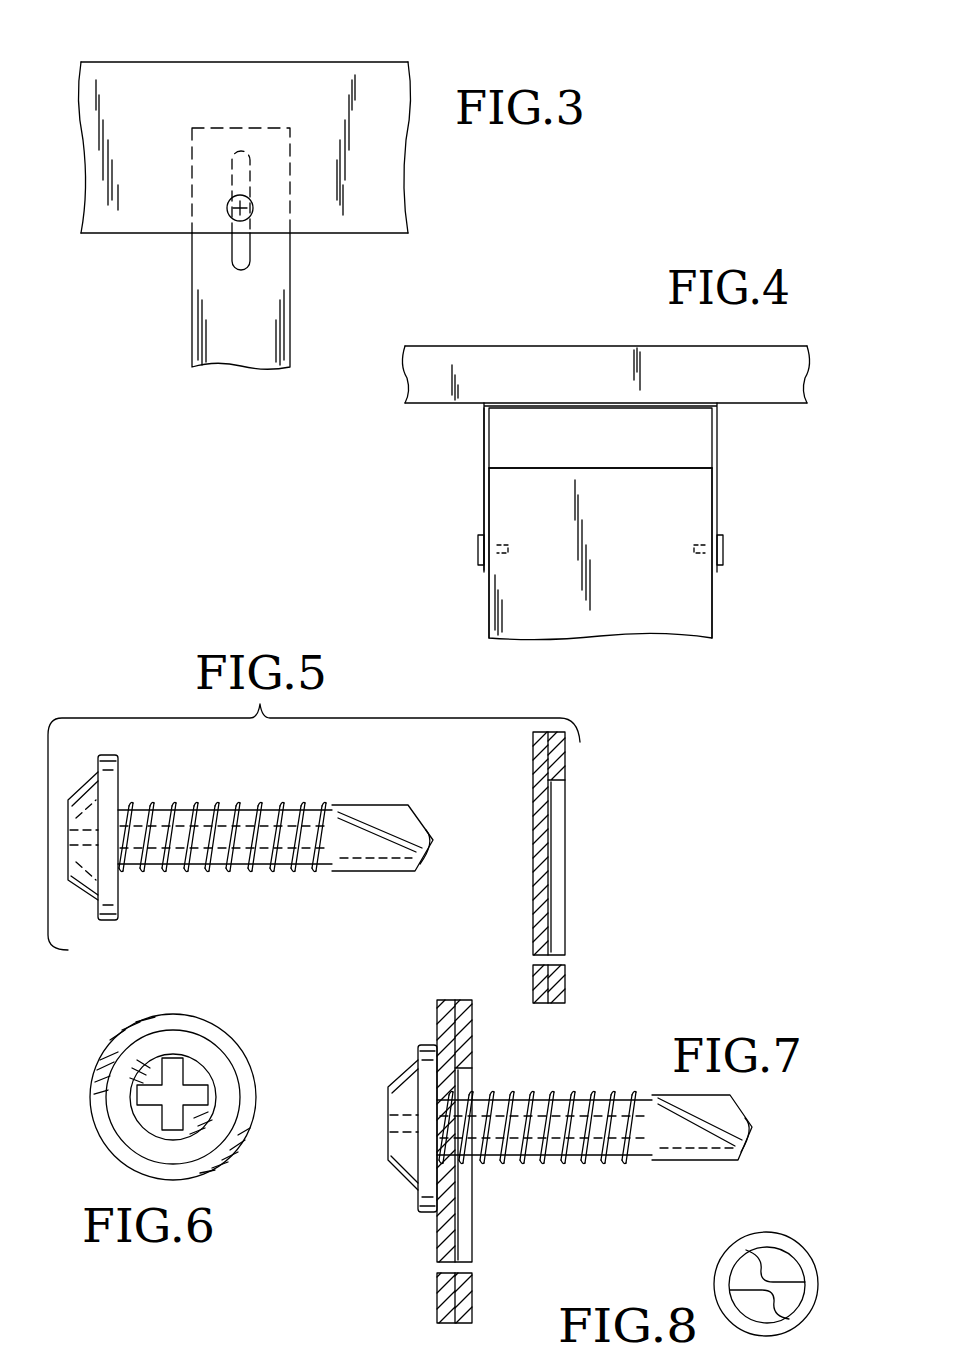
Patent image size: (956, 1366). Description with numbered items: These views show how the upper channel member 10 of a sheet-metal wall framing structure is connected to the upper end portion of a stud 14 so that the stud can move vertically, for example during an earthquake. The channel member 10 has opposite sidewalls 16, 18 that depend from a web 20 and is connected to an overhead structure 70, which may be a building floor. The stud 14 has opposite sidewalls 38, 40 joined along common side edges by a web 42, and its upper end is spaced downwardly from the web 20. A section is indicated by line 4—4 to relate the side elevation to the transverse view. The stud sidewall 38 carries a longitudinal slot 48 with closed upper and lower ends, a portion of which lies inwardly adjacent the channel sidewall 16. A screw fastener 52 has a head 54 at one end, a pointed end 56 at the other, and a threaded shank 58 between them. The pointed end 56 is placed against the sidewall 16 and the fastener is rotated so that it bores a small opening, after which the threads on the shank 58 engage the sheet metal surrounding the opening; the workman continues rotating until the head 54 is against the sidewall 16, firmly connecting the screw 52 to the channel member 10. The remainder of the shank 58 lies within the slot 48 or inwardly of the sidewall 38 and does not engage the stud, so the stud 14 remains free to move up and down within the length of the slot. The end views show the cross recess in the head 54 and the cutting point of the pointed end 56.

In FIG. 3, the section line 4- 4 is at (265, 32).
In FIG. 3, the upper channel member 10 is at (125, 247).
In FIG. 3, the stud 14 is at (309, 348).
In FIG. 4, the stud 14 is at (466, 582).
In FIG. 7, the stud 14 is at (491, 1229).
In FIG. 3, the sidewall 16 is at (172, 212).
In FIG. 4, the sidewall 16 is at (715, 506).
In FIG. 5, the sidewall 16 is at (535, 800).
In FIG. 7, the sidewall 16 is at (437, 1240).
In FIG. 4, the sidewall 18 is at (484, 438).
In FIG. 3, the web 20 is at (330, 62).
In FIG. 4, the web 20 is at (695, 413).
In FIG. 3, the sidewall 38 is at (277, 296).
In FIG. 4, the sidewall 38 is at (713, 603).
In FIG. 5, the sidewall 38 is at (565, 766).
In FIG. 7, the sidewall 38 is at (472, 1041).
In FIG. 4, the sidewall 40 is at (488, 602).
In FIG. 4, the web 42 is at (650, 605).
In FIG. 3, the longitudinal slot 48 is at (247, 255).
In FIG. 5, the longitudinal slot 48 is at (560, 848).
In FIG. 7, the longitudinal slot 48 is at (466, 1207).
In FIG. 3, the screw fastener 52 is at (249, 200).
In FIG. 5, the screw fastener 52 is at (279, 870).
In FIG. 6, the screw fastener 52 is at (188, 1093).
In FIG. 7, the screw fastener 52 is at (574, 1131).
In FIG. 8, the screw fastener 52 is at (763, 1257).
In FIG. 5, the head 54 is at (88, 897).
In FIG. 6, the head 54 is at (150, 1116).
In FIG. 7, the head 54 is at (398, 1153).
In FIG. 5, the pointed end 56 is at (437, 845).
In FIG. 7, the pointed end 56 is at (752, 1150).
In FIG. 8, the pointed end 56 is at (757, 1265).
In FIG. 5, the threaded shank 58 is at (272, 805).
In FIG. 7, the threaded shank 58 is at (554, 1090).
In FIG. 4, the overhead structure 70 is at (556, 360).